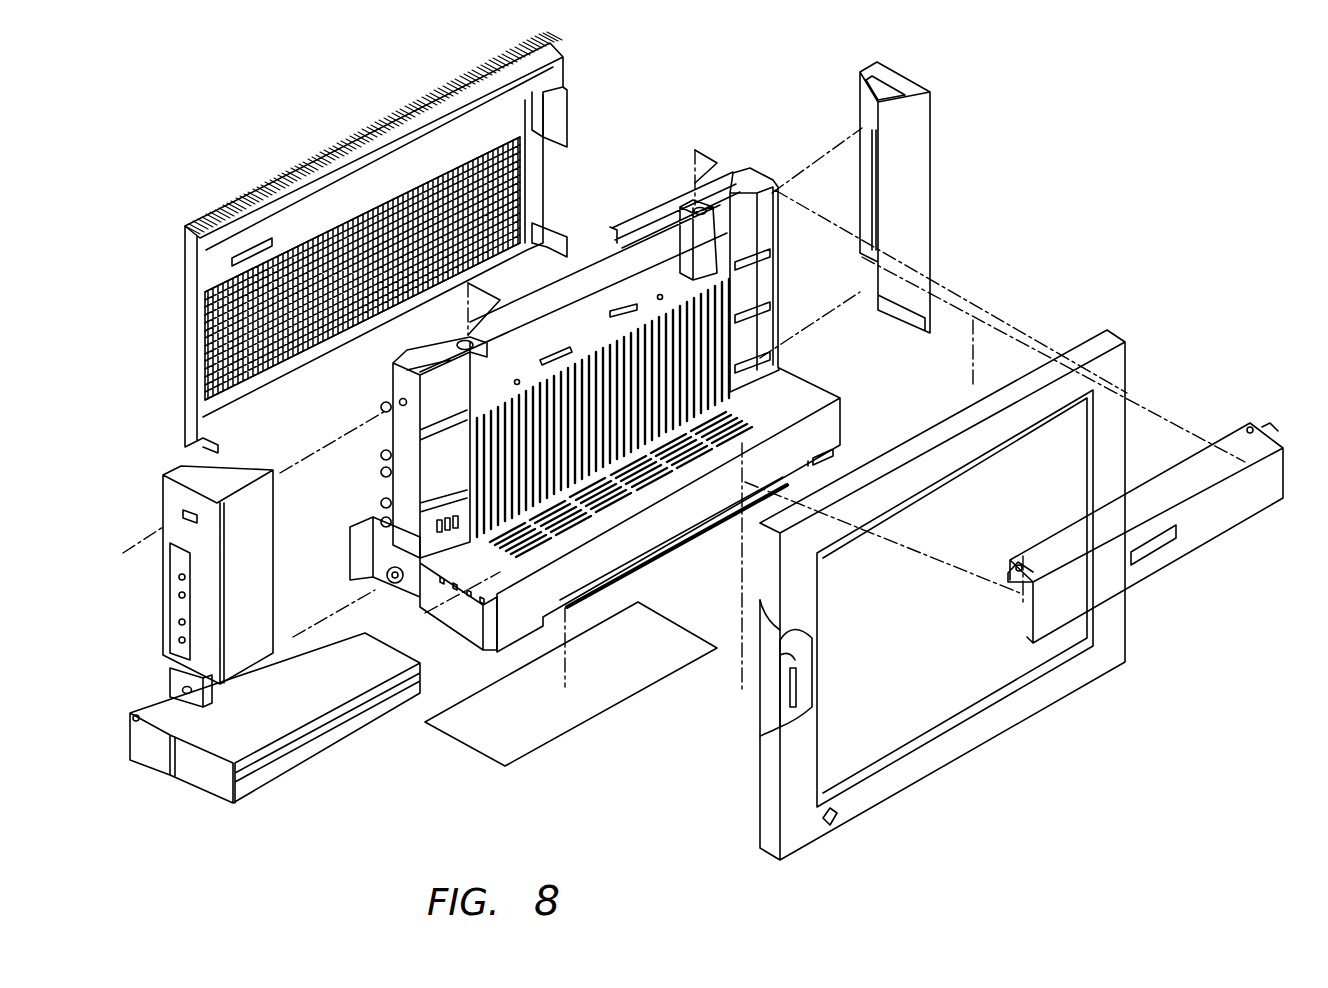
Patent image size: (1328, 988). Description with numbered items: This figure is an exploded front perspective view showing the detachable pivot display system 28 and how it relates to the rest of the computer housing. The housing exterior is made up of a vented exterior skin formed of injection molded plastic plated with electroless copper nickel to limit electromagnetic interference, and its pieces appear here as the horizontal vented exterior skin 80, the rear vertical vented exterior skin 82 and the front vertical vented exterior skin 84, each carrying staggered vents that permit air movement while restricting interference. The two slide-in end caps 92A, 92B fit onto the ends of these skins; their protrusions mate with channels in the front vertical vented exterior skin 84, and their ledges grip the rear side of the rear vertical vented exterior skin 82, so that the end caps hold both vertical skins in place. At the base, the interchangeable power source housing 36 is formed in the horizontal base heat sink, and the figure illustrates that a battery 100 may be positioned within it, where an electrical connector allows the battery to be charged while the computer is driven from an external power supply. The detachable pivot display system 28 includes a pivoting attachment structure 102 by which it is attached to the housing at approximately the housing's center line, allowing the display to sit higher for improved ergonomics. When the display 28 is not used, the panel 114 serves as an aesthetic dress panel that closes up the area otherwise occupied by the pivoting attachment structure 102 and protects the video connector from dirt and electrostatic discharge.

The detachable pivot display system 28 is at (983, 732).
The interchangeable power source housing 36 is at (473, 613).
The horizontal vented exterior skin 80 is at (803, 394).
The rear vertical vented exterior skin 82 is at (408, 110).
The front vertical vented exterior skin 84 is at (763, 277).
The slide-in end cap 92A is at (258, 545).
The slide-in end cap 92B is at (918, 212).
The battery 100 is at (320, 743).
The pivoting attachment structure 102 is at (783, 660).
The panel 114 is at (1232, 514).